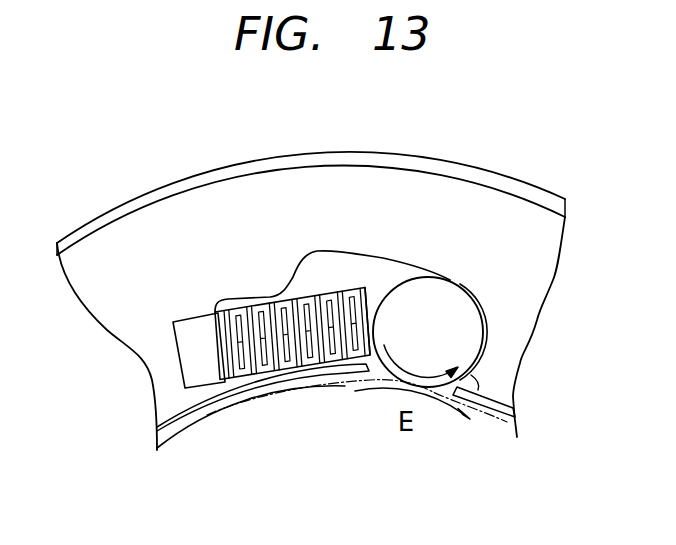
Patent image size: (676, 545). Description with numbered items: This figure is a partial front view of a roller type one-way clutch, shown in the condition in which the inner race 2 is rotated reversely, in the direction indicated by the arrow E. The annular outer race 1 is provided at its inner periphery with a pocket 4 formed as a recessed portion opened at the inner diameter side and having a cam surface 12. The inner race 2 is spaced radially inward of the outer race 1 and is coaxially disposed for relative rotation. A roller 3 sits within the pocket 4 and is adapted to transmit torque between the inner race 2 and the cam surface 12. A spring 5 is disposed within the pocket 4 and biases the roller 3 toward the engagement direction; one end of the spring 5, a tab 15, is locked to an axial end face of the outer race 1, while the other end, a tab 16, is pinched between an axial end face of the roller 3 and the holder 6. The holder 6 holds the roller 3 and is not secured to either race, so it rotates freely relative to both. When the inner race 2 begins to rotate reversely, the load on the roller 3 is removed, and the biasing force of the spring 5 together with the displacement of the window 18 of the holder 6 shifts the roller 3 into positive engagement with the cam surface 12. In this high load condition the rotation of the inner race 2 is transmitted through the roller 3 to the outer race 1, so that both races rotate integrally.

The outer race 1 is at (133, 247).
The inner race 2 is at (211, 457).
The roller 3 is at (433, 292).
The pocket 4 is at (342, 260).
The spring 5 is at (268, 315).
The holder 6 is at (503, 417).
The cam surface 12 is at (459, 283).
The tab 15 is at (192, 350).
The tab 16 is at (377, 290).
The window 18 is at (362, 371).